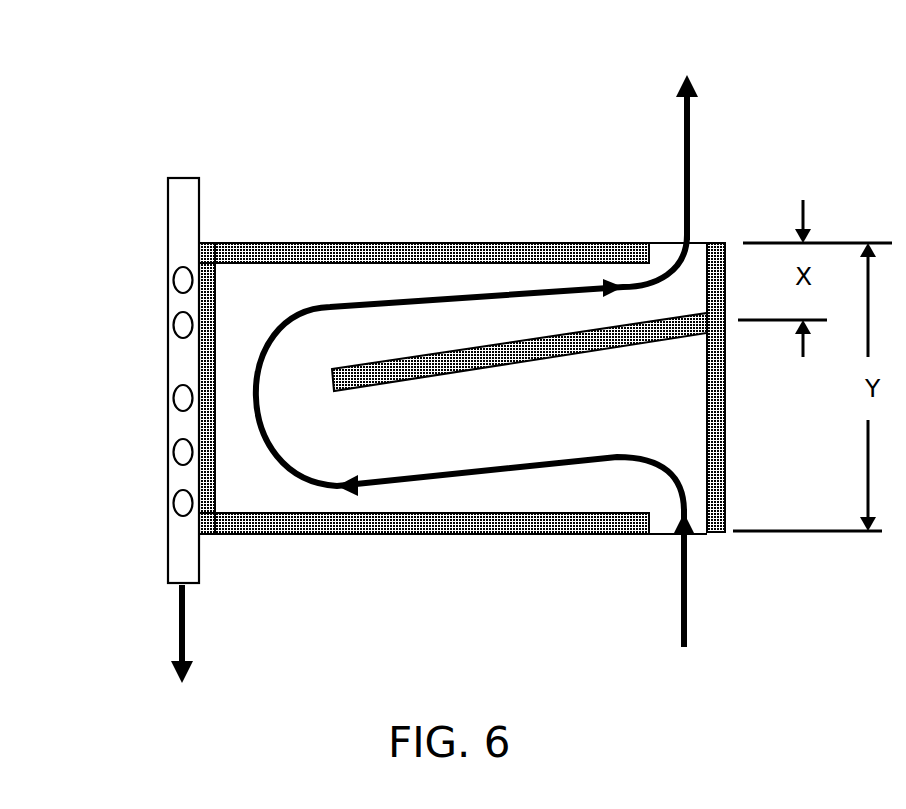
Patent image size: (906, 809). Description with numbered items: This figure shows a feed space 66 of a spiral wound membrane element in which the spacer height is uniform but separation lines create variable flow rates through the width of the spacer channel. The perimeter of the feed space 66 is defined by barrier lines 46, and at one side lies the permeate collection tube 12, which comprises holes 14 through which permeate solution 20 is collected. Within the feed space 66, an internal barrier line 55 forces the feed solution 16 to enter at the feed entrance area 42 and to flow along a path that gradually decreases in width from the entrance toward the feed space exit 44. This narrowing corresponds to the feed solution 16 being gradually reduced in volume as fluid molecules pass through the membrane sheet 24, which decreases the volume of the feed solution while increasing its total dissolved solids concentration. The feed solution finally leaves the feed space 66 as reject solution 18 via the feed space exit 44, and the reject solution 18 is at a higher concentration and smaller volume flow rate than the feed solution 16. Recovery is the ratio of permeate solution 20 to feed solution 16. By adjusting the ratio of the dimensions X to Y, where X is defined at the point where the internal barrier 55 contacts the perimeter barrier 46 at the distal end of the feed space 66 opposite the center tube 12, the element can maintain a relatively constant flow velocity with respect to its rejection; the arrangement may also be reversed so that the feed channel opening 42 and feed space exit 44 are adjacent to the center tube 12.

The permeate collection tube 12 is at (168, 528).
The holes 14 is at (185, 282).
The feed solution 16 is at (680, 627).
The reject solution 18 is at (689, 131).
The permeate solution 20 is at (177, 632).
The membrane sheet 24 is at (245, 293).
The feed entrance area 42 is at (672, 532).
The feed space exit 44 is at (664, 242).
The barrier lines 46 is at (388, 252).
The internal barrier lines 55 is at (488, 357).
The feed space 66 is at (430, 284).